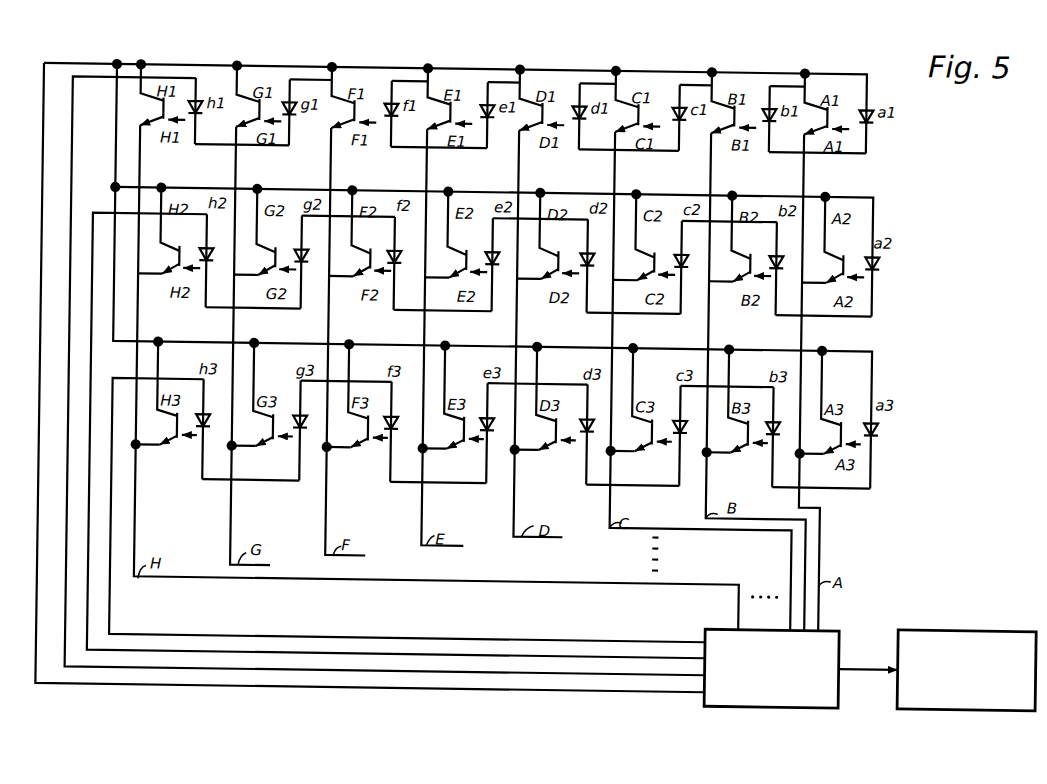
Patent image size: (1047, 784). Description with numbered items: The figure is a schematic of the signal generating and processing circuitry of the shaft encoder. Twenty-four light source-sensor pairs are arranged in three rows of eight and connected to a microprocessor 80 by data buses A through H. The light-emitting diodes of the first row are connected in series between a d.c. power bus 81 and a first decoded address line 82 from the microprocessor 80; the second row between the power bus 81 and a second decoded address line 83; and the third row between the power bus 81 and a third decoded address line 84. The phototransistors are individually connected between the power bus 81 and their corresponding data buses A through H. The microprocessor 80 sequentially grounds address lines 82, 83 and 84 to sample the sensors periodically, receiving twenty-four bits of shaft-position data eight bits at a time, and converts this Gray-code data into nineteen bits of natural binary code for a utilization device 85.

The microprocessor 80 is at (784, 699).
The d.c. power bus 81 is at (399, 684).
The first decoded address line 82 is at (475, 667).
The second decoded address line 83 is at (556, 633).
The third decoded address line 84 is at (603, 635).
The utilization device 85 is at (958, 620).